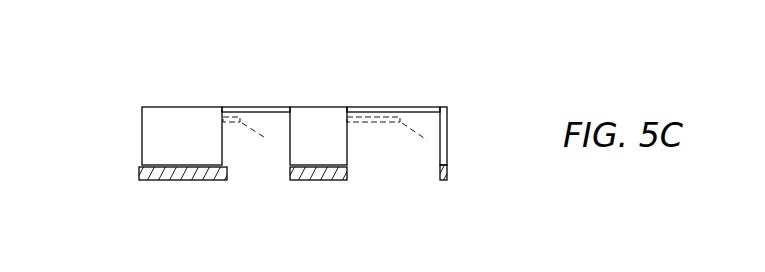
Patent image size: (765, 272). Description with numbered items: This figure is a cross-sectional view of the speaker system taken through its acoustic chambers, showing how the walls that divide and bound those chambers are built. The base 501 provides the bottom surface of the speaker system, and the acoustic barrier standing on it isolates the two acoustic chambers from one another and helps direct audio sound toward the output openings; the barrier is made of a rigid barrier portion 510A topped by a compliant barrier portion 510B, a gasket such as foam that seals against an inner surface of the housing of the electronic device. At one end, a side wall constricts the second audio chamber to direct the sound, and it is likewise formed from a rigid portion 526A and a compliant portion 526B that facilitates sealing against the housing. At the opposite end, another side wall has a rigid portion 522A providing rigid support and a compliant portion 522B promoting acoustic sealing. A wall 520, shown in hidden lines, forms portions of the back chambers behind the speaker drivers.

The base 501 is at (375, 108).
The rigid barrier portion 510A is at (320, 125).
The compliant barrier portion 510B is at (322, 182).
The wall 520 is at (275, 108).
The rigid portion of side wall 522A is at (447, 150).
The compliant portion of side wall 522B is at (445, 181).
The rigid portion of side wall 526A is at (151, 126).
The compliant portion of side wall 526B is at (152, 181).